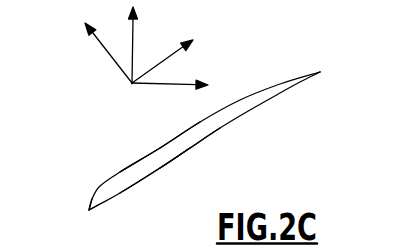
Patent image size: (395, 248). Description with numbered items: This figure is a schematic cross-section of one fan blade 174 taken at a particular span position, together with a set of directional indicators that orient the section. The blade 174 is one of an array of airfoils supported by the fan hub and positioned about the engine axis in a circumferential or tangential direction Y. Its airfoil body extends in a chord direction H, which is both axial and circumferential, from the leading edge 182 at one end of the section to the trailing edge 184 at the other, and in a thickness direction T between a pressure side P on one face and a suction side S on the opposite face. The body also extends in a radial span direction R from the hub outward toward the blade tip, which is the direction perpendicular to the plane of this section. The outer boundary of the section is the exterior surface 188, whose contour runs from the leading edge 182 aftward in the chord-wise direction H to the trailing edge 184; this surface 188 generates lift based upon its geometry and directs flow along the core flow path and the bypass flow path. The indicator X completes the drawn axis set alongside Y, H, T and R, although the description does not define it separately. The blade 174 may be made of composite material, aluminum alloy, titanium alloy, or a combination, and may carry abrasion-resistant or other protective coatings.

The fan blade 174 is at (270, 60).
The leading edge 182 is at (89, 210).
The trailing edge 184 is at (320, 72).
The exterior surface 188 is at (200, 157).
The suction side S is at (157, 145).
The pressure side P is at (160, 167).
The X axis X is at (162, 84).
The circumferential or tangential direction Y is at (133, 35).
The chord direction H is at (175, 53).
The thickness direction T is at (100, 47).
The radial span direction R is at (127, 90).